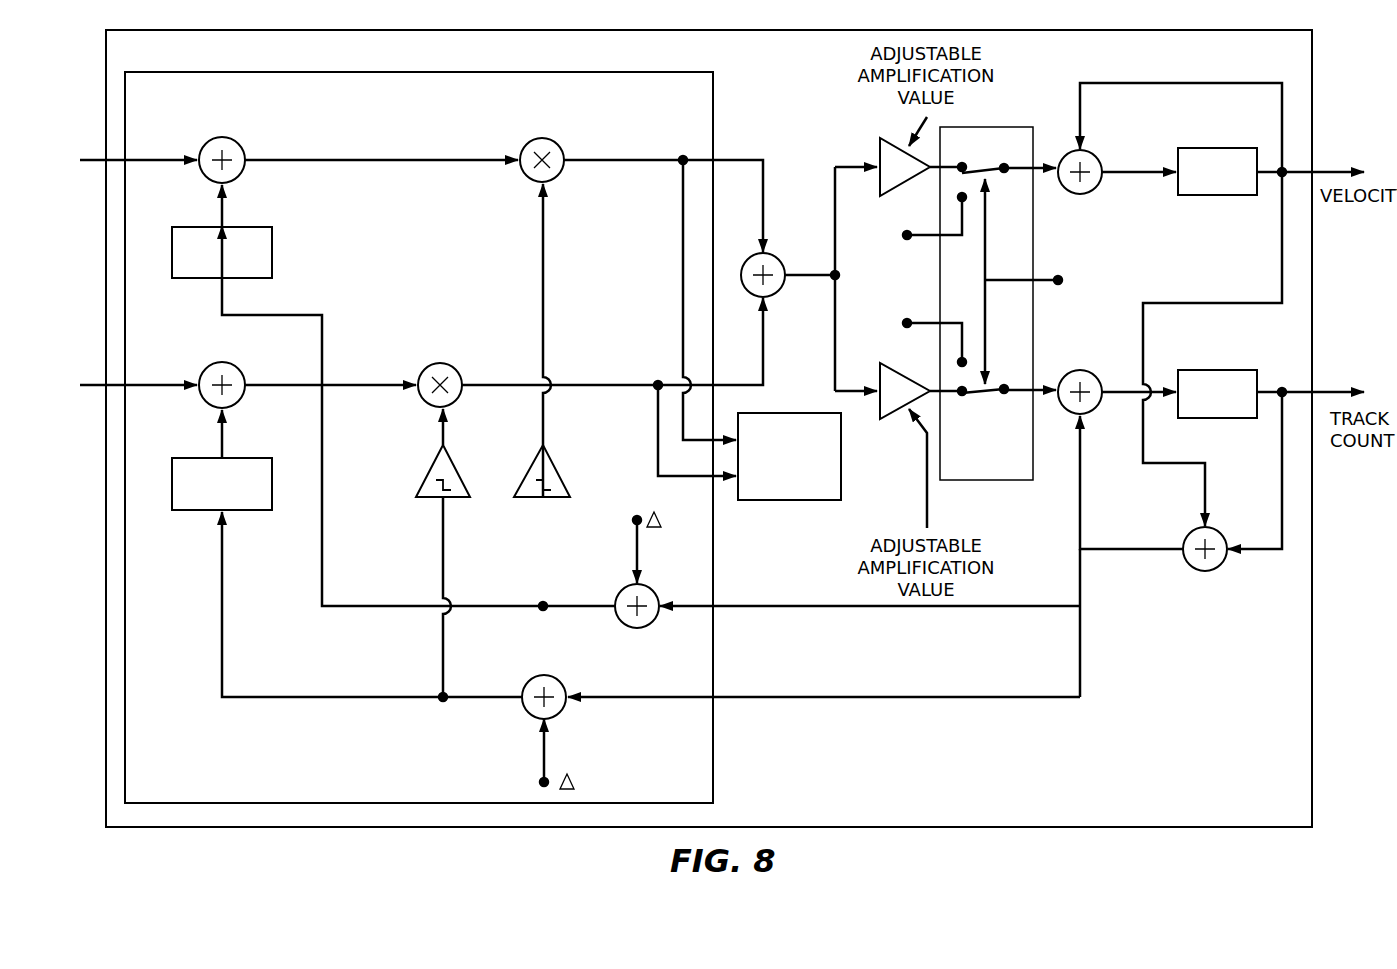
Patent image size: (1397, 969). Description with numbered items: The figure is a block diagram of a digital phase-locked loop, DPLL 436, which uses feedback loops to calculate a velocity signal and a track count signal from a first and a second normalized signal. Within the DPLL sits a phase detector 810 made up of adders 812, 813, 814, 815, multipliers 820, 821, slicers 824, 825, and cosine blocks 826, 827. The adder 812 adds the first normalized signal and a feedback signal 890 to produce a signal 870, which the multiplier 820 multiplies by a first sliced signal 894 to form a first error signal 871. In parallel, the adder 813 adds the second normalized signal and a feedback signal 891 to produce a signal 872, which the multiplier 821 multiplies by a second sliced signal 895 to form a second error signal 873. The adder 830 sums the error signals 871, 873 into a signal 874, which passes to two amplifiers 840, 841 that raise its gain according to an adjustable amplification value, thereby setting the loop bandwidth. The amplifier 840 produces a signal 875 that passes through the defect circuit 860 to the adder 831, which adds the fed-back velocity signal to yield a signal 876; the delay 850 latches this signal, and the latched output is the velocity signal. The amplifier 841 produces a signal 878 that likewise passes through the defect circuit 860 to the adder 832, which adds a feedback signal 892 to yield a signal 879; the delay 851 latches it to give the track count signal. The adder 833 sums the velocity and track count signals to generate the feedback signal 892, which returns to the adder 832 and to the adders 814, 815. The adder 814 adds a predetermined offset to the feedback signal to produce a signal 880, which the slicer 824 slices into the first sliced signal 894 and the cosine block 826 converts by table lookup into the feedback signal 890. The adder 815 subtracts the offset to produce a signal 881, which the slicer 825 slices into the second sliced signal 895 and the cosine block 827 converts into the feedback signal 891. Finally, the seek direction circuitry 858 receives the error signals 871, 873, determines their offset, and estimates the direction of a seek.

The DPLL 436 is at (1276, 823).
The phase detector 810 is at (356, 787).
The adder 812 is at (233, 138).
The adder 813 is at (231, 362).
The adder 814 is at (640, 629).
The adder 815 is at (543, 674).
The multiplier 820 is at (545, 138).
The multiplier 821 is at (449, 363).
The slicer 824 is at (562, 472).
The slicer 825 is at (416, 494).
The cosine block 826 is at (274, 249).
The cosine block 827 is at (273, 470).
The adder 830 is at (781, 258).
The adder 831 is at (1082, 194).
The adder 832 is at (1074, 370).
The adder 833 is at (1208, 572).
The amplifier 840 is at (884, 140).
The amplifier 841 is at (888, 422).
The delay 850 is at (1218, 197).
The delay 851 is at (1213, 368).
The seek direction circuitry 858 is at (792, 502).
The defect circuit 860 is at (1000, 482).
The signal 870 is at (430, 158).
The first error signal 871 is at (658, 158).
The signal 872 is at (377, 382).
The second error signal 873 is at (617, 382).
The signal 874 is at (840, 282).
The signal 875 is at (1005, 160).
The signal 876 is at (1136, 168).
The signal 878 is at (1018, 386).
The signal 879 is at (1124, 398).
The signal 880 is at (578, 604).
The signal 881 is at (382, 695).
The feedback signal 890 is at (225, 206).
The feedback signal 891 is at (220, 448).
The feedback signal 892 is at (1083, 660).
The first sliced signal 894 is at (544, 242).
The second sliced signal 895 is at (445, 430).